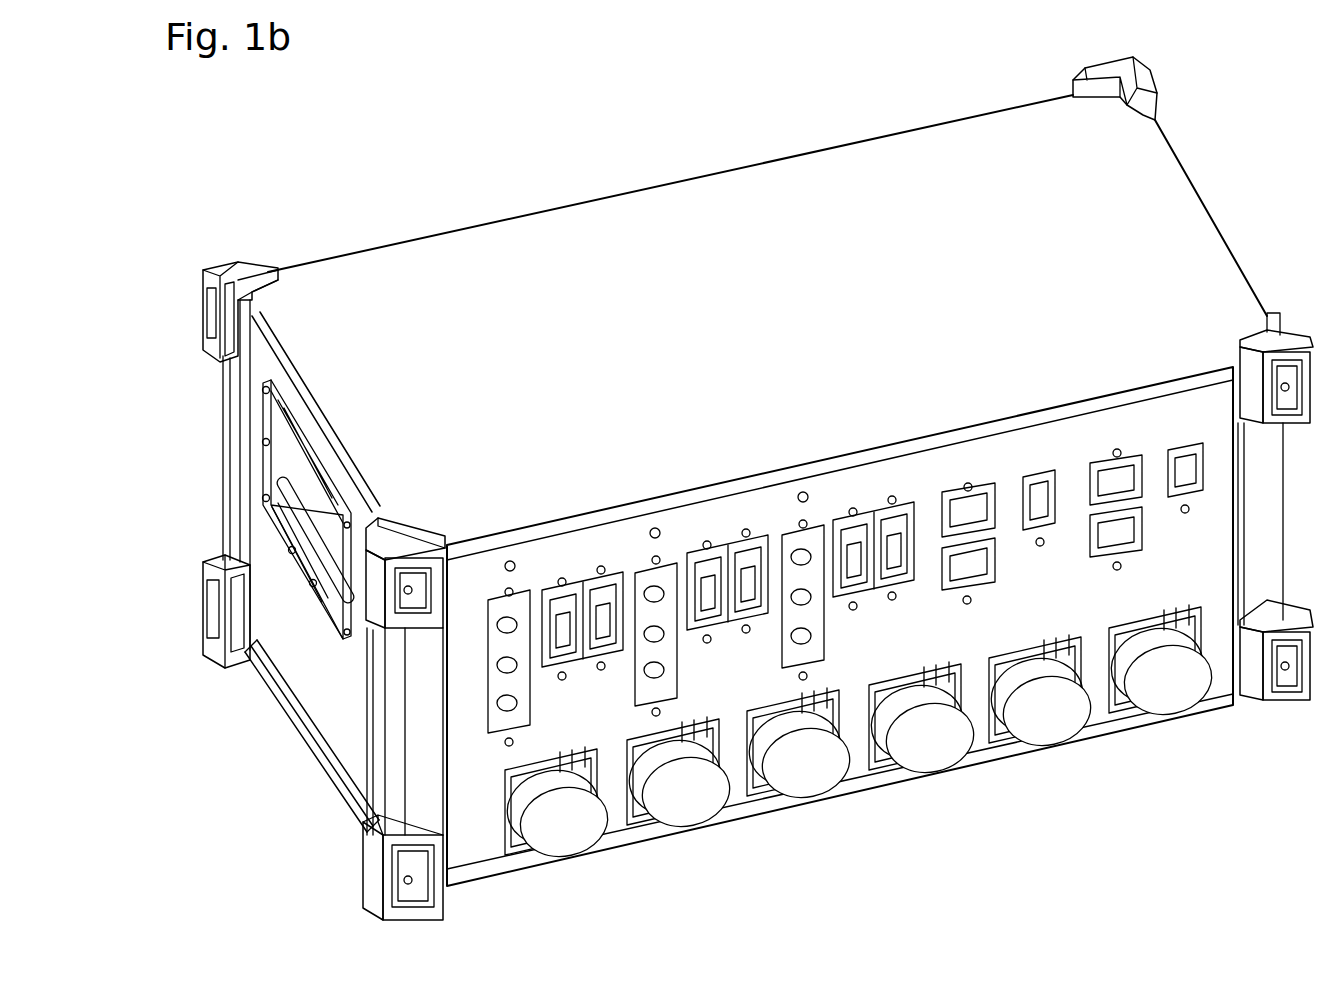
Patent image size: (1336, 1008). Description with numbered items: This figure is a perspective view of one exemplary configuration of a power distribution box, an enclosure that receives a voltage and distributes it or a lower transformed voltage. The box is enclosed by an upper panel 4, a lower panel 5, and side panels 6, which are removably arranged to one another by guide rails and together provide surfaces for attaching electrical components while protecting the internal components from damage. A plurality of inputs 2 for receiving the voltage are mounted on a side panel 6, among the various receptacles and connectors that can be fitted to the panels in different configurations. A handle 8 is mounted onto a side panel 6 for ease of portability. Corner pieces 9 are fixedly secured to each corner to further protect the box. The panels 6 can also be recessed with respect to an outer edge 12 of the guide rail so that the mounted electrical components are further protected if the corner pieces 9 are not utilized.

The input 2 is at (698, 818).
The upper panel 4 is at (1190, 227).
The lower panel 5 is at (494, 875).
The side panel 6 is at (320, 730).
The handle 8 is at (323, 603).
The corner piece 9 is at (220, 268).
The outer edge 12 is at (662, 281).